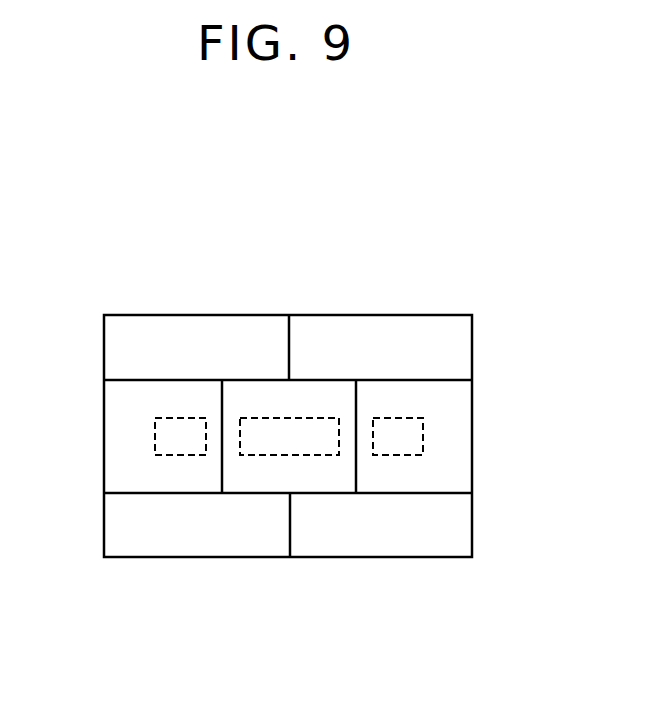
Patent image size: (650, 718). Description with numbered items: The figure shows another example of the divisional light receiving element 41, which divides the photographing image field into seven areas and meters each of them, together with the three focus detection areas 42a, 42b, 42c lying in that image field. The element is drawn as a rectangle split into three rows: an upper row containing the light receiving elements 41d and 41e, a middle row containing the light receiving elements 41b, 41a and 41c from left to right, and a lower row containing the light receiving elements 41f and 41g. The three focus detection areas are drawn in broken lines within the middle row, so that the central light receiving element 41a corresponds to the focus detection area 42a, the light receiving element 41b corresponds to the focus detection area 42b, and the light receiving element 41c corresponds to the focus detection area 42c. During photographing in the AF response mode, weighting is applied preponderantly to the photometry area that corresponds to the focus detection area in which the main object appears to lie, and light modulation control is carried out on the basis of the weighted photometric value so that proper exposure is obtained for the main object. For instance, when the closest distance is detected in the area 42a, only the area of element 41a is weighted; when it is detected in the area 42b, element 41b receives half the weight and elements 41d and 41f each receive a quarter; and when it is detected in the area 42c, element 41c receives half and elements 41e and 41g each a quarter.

The divisional light receiving element 41 is at (466, 397).
The light receiving element for the central area 41a is at (323, 475).
The light receiving element 41b is at (130, 479).
The light receiving element 41c is at (447, 472).
The light receiving element 41d is at (219, 330).
The light receiving element 41e is at (372, 333).
The light receiving element 41f is at (169, 541).
The light receiving element 41g is at (452, 537).
The focus detection area 42a is at (265, 440).
The focus detection area 42b is at (155, 437).
The focus detection area 42c is at (425, 434).